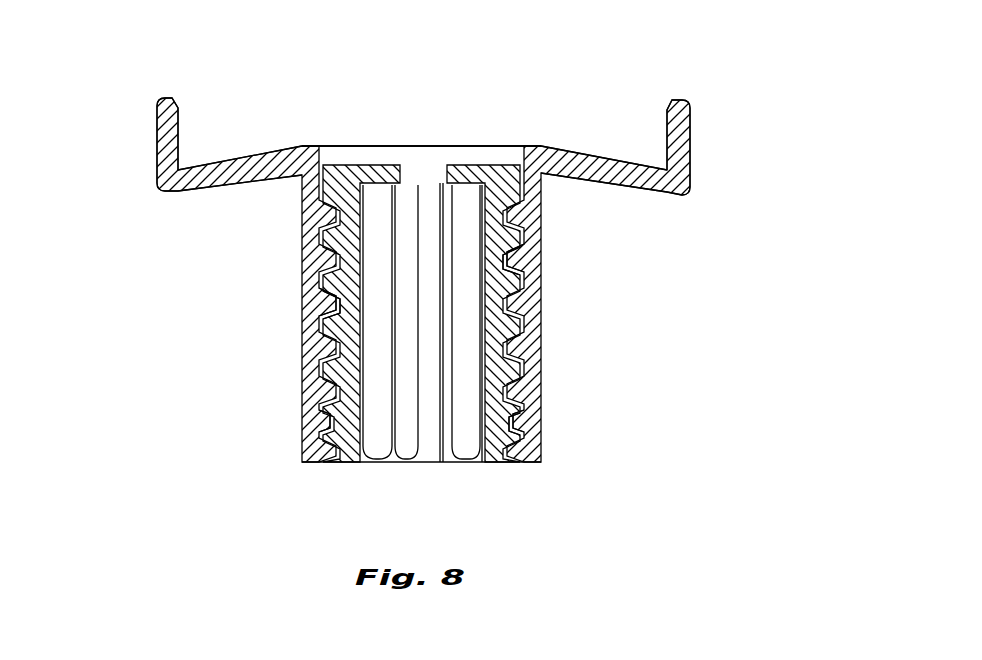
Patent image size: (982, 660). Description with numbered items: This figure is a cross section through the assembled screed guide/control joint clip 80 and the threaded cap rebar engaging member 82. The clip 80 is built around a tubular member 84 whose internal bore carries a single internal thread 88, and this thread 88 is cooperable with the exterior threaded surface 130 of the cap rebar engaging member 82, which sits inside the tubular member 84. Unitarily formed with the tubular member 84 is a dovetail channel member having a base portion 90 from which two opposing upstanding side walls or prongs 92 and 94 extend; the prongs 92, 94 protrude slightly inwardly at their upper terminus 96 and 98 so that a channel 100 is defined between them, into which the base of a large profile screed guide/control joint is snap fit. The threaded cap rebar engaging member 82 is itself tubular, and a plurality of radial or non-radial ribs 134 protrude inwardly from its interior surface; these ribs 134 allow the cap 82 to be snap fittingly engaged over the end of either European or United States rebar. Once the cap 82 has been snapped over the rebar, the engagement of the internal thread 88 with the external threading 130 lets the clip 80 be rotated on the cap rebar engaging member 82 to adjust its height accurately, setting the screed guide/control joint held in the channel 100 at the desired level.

The screed guide/control joint clip 80 is at (302, 222).
The threaded cap rebar engaging member 82 is at (503, 463).
The tubular member 84 is at (543, 310).
The single internal thread 88 is at (512, 425).
The base portion 90 is at (538, 145).
The upstanding side wall or prong 92 is at (157, 142).
The upstanding side wall or prong 94 is at (690, 130).
The upper terminus 96 is at (179, 97).
The upper terminus 98 is at (667, 100).
The channel 100 is at (446, 132).
The exterior threaded surface 130 is at (330, 331).
The ribs 134 is at (380, 445).